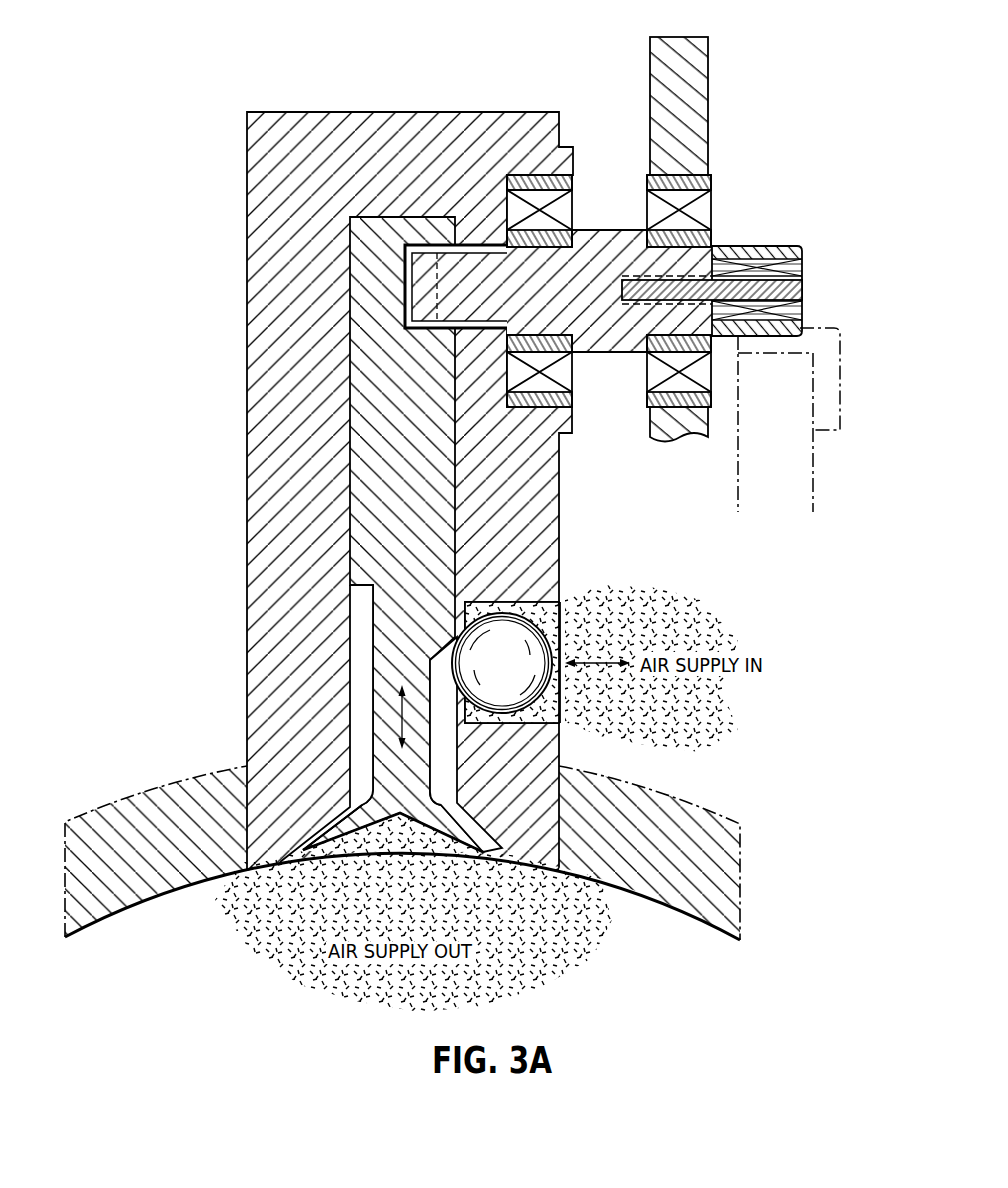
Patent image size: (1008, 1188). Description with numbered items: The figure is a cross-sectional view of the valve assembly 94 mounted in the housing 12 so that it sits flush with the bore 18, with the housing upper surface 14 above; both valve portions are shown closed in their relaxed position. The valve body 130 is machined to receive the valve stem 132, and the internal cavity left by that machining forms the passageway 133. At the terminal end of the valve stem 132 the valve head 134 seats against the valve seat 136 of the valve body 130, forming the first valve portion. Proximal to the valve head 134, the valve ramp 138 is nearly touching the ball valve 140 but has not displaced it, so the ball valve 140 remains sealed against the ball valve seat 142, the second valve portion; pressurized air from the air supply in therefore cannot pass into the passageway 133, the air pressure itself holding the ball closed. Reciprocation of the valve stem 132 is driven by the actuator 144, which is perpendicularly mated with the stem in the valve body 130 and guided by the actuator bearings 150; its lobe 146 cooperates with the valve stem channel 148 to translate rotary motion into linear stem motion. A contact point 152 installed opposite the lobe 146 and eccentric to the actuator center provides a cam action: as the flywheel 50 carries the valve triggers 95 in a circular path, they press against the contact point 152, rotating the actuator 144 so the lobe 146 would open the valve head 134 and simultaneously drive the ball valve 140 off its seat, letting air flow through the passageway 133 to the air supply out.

The valve assembly 94 is at (150, 56).
The valve body 130 is at (242, 225).
The valve stem 132 is at (350, 411).
The passageway 133 is at (363, 647).
The valve head 134 is at (310, 856).
The valve seat 136 is at (333, 828).
The valve ramp 138 is at (440, 650).
The ball valve 140 is at (527, 656).
The ball valve seat 142 is at (462, 694).
The actuator 144 is at (612, 353).
The lobe 146 is at (440, 285).
The valve stem channel 148 is at (408, 285).
The actuator bearings 150 is at (572, 203).
The contact point 152 is at (785, 247).
The housing upper surface 14 is at (708, 92).
The housing 12 is at (136, 790).
The bore 18 is at (130, 908).
The valve triggers 95 is at (841, 400).
The flywheel 50 is at (814, 477).